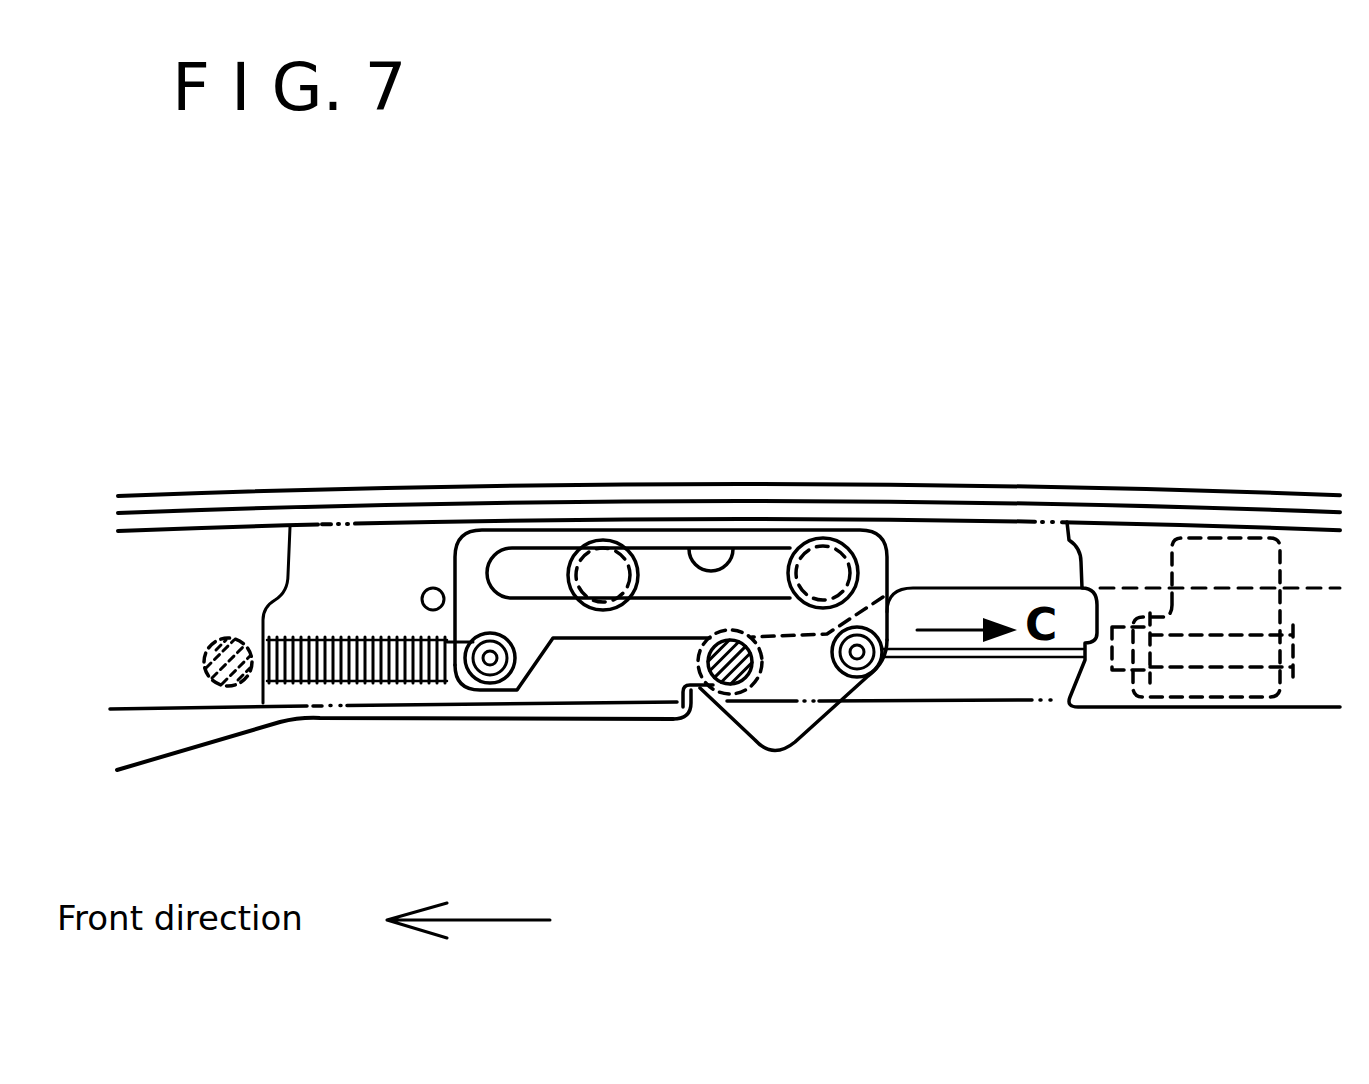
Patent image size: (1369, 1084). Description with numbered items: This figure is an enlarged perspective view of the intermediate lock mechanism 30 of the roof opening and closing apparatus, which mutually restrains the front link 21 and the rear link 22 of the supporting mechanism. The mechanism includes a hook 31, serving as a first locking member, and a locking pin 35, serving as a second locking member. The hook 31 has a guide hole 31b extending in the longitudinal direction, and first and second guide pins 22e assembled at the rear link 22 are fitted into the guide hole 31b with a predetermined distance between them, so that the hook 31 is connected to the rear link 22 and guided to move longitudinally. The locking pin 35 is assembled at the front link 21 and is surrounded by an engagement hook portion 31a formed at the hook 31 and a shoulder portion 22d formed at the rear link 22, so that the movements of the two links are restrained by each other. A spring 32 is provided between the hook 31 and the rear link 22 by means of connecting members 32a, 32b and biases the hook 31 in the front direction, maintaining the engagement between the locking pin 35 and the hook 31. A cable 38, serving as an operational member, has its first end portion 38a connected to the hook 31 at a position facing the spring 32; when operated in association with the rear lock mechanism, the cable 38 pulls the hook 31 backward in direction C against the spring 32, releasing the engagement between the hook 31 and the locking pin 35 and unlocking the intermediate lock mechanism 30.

The front link 21 is at (1098, 710).
The rear link 22 is at (954, 486).
The shoulder portion 22d is at (688, 673).
The first and second guide pins 22e is at (587, 541).
The intermediate lock mechanism 30 is at (707, 643).
The hook 31 is at (653, 531).
The engagement hook portion 31a is at (723, 712).
The guide hole 31b is at (740, 548).
The spring 32 is at (347, 684).
The connecting member 32a is at (487, 690).
The connecting member 32b is at (217, 684).
The locking pin 35 is at (728, 690).
The cable 38 is at (1227, 662).
The first end portion of the cable 38a is at (864, 678).